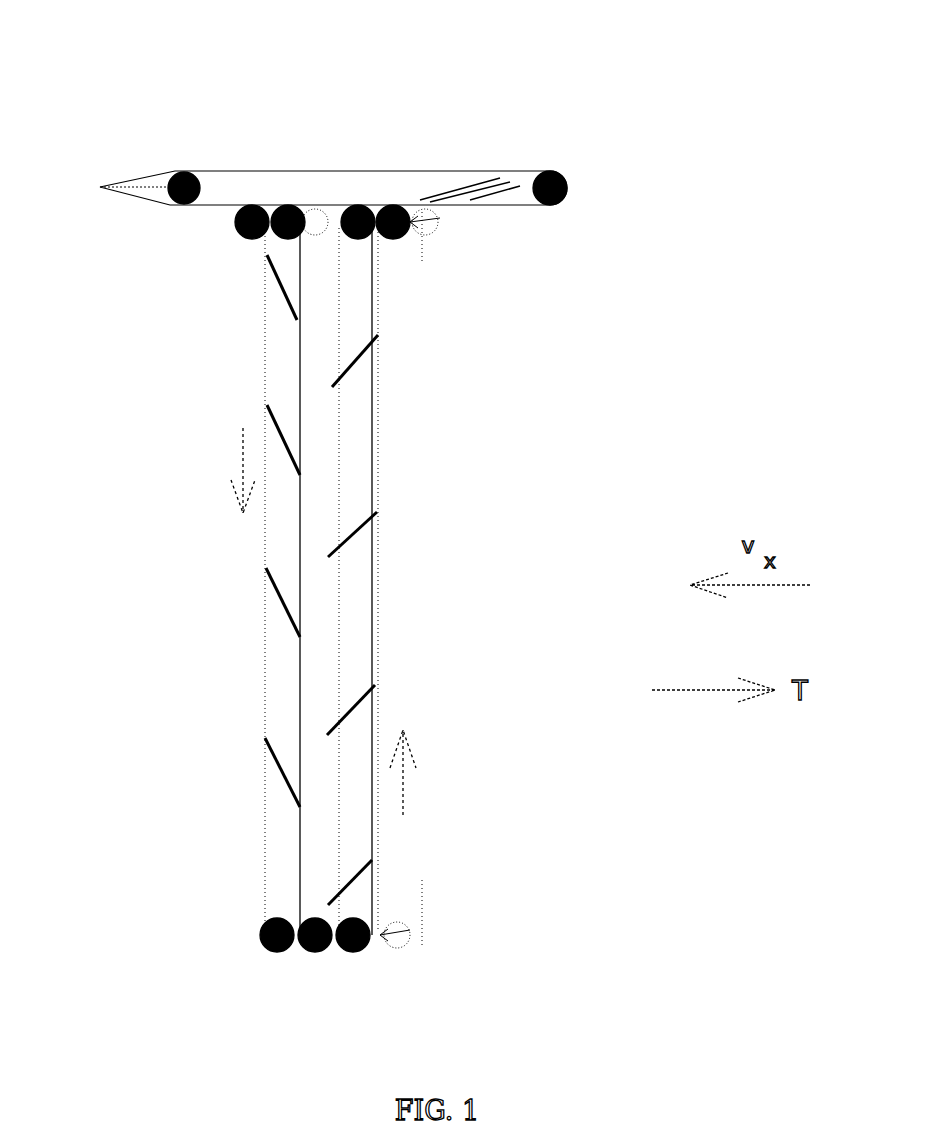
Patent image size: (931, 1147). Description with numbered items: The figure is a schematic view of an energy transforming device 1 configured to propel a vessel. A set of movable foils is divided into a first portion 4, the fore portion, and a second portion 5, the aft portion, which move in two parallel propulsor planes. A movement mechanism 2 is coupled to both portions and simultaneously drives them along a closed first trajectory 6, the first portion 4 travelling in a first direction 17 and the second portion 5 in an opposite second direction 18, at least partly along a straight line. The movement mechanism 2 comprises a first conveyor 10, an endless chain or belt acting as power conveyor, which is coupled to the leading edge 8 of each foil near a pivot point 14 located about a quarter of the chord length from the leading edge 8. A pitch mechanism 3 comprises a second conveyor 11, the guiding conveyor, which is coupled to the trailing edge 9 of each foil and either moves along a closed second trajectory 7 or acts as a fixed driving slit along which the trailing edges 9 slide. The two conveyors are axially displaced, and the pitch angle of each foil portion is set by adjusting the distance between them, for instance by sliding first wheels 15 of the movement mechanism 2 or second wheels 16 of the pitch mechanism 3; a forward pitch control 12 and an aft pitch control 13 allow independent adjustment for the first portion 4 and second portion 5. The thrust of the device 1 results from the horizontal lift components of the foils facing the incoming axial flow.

The energy transforming device 1 is at (518, 147).
The movement mechanism 2 is at (305, 413).
The pitch mechanism 3 is at (390, 925).
The first portion of the set of movable foils 4 is at (372, 688).
The second portion of the set of movable foils 5 is at (265, 775).
The closed first trajectory 6 is at (417, 175).
The closed second trajectory 7 is at (368, 193).
The leading edge 8 is at (372, 512).
The trailing edge 9 is at (330, 558).
The first conveyor 10 is at (372, 440).
The second conveyor 11 is at (265, 370).
The forward pitch control 12 is at (415, 232).
The aft pitch control 13 is at (289, 208).
The pivot point 14 is at (372, 512).
The first wheels 15 is at (288, 208).
The second wheels 16 is at (354, 210).
The first direction 17 is at (421, 772).
The second direction 18 is at (230, 470).